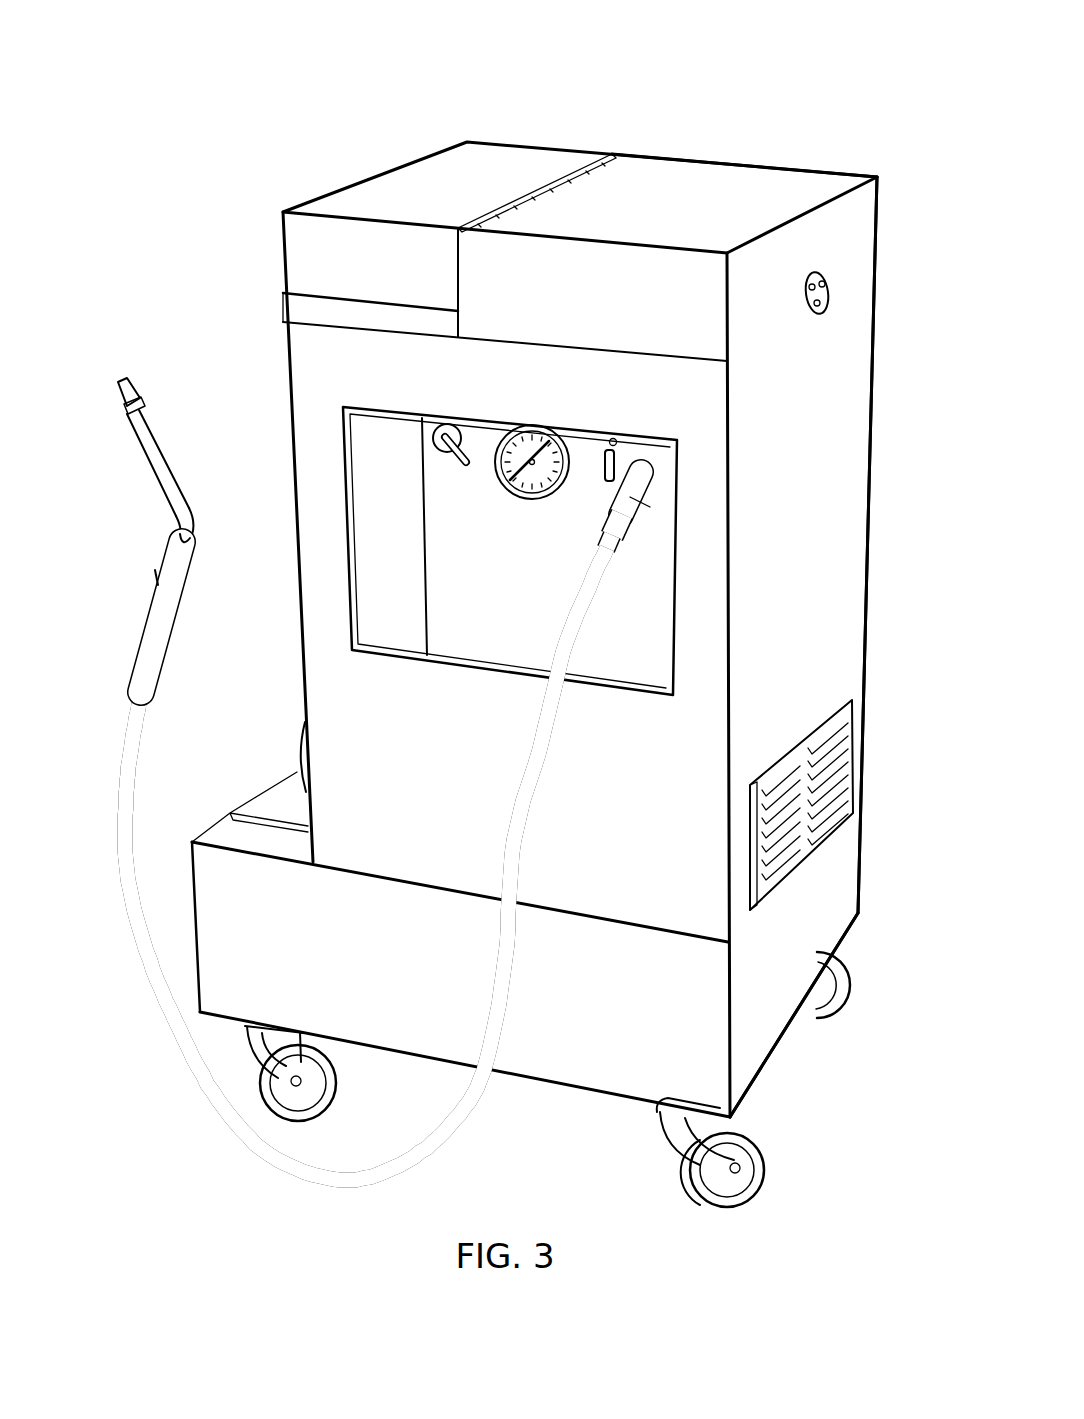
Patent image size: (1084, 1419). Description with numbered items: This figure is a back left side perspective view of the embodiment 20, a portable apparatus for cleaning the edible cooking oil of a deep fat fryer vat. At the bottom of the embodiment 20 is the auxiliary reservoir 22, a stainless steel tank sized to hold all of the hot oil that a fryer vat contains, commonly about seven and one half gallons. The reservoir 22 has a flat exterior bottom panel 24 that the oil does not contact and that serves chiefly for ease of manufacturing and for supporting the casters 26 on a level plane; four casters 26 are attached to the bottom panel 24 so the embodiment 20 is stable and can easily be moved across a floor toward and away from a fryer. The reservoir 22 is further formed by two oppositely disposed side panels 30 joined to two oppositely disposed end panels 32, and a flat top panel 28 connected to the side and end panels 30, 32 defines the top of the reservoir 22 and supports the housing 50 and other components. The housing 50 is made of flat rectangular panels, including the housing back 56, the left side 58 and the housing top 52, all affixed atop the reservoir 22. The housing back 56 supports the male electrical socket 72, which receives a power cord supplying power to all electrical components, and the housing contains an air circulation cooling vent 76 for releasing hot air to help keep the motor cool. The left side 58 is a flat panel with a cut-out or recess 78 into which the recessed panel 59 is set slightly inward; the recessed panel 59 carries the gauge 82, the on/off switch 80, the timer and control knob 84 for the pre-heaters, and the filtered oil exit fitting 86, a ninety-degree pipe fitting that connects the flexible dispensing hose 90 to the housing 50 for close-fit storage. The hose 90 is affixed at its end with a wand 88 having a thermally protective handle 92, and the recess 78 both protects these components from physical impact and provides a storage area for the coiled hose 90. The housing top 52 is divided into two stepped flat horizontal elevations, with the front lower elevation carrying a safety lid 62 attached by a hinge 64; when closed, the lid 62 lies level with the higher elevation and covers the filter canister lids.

The embodiment 20 is at (548, 647).
The auxiliary reservoir 22 is at (655, 1025).
The flat exterior bottom panel 24 is at (790, 1035).
The casters 26 is at (753, 1196).
The flat top panel 28 is at (233, 828).
The side panels 30 is at (535, 1065).
The end panels 32 is at (743, 1067).
The housing 50 is at (850, 560).
The housing top 52 is at (690, 175).
The housing back 56 is at (840, 423).
The left side 58 is at (307, 350).
The recessed panel 59 is at (442, 524).
The safety lid 62 is at (478, 155).
The hinge 64 is at (595, 150).
The electrical socket 72 is at (827, 292).
The cooling vent 76 is at (860, 788).
The recess 78 is at (373, 455).
The on/off switch 80 is at (452, 425).
The gauge 82 is at (537, 428).
The timer and control knob 84 is at (619, 440).
The filtered oil exit fitting 86 is at (672, 486).
The wand 88 is at (153, 535).
The flexible dispensing hose 90 is at (222, 1110).
The handle 92 is at (148, 652).